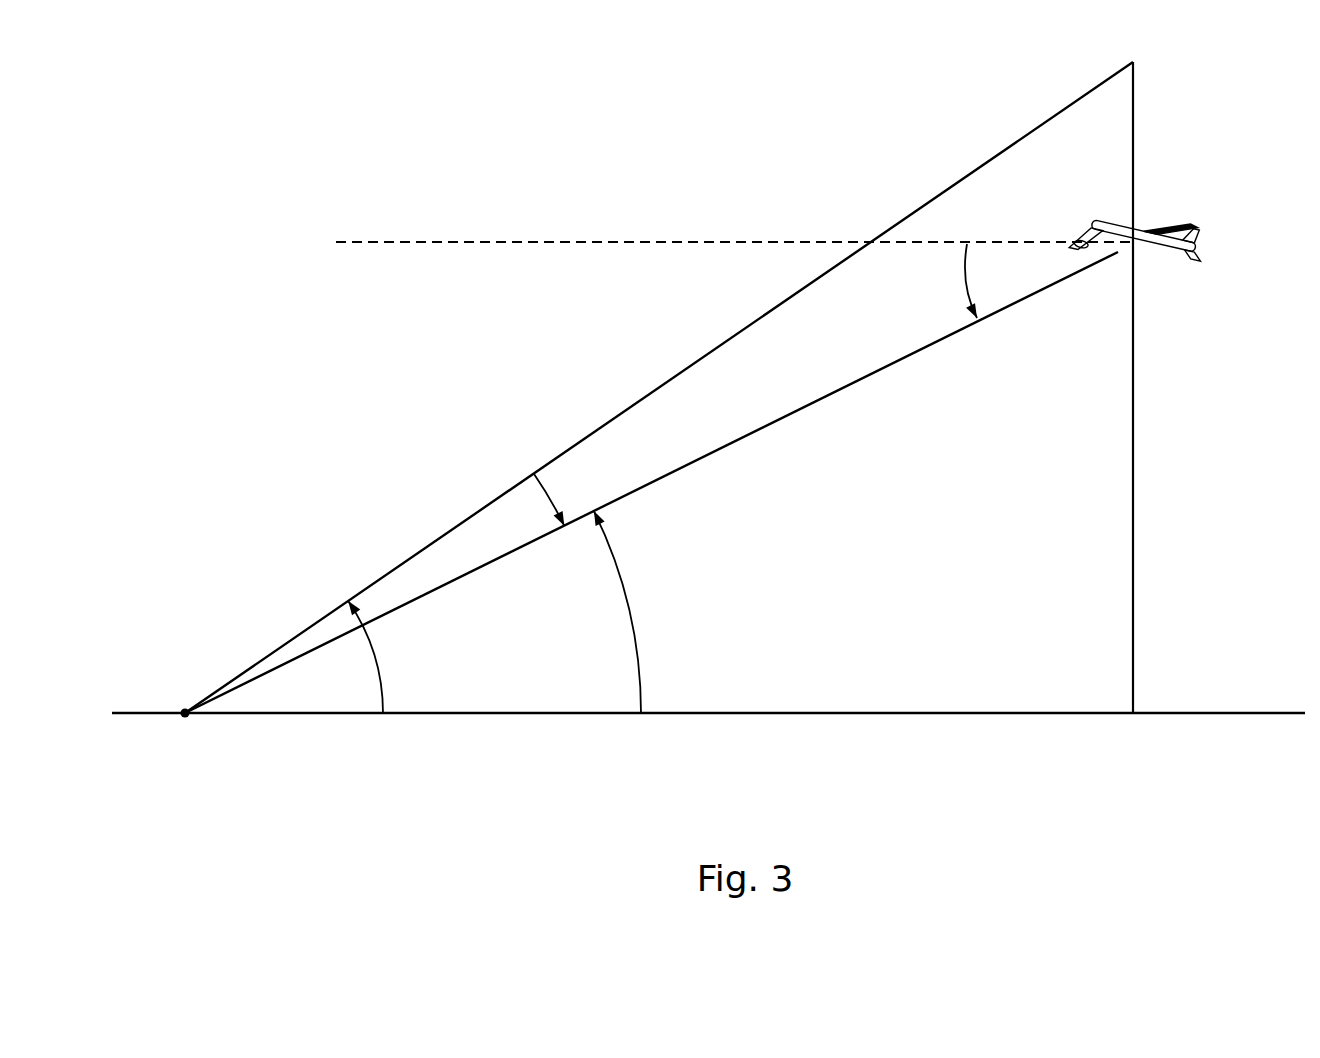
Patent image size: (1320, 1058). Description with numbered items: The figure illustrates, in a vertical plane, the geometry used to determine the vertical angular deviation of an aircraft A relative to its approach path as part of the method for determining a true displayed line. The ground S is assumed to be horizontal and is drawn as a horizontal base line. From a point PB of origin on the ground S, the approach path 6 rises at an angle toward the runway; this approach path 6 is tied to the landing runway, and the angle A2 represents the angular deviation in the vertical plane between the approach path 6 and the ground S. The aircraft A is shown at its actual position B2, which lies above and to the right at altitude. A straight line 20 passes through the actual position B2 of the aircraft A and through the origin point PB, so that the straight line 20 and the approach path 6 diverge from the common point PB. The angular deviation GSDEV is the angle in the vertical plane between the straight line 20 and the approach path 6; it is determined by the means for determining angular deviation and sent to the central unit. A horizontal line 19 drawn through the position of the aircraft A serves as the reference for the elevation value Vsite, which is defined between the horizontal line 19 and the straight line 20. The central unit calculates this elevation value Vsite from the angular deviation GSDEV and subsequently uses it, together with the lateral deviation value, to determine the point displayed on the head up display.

The ground S is at (895, 713).
The point of origin on the ground of the approach path PB is at (187, 720).
The approach path 6 is at (650, 390).
The straight line 20 is at (738, 438).
The horizontal line 19 is at (533, 242).
The aircraft A is at (1152, 249).
The actual position of the aircraft B2 is at (1152, 218).
The angular deviation between approach path and ground A2 is at (380, 657).
The angular deviation GSDEV is at (586, 495).
The elevation value Vsite is at (785, 478).